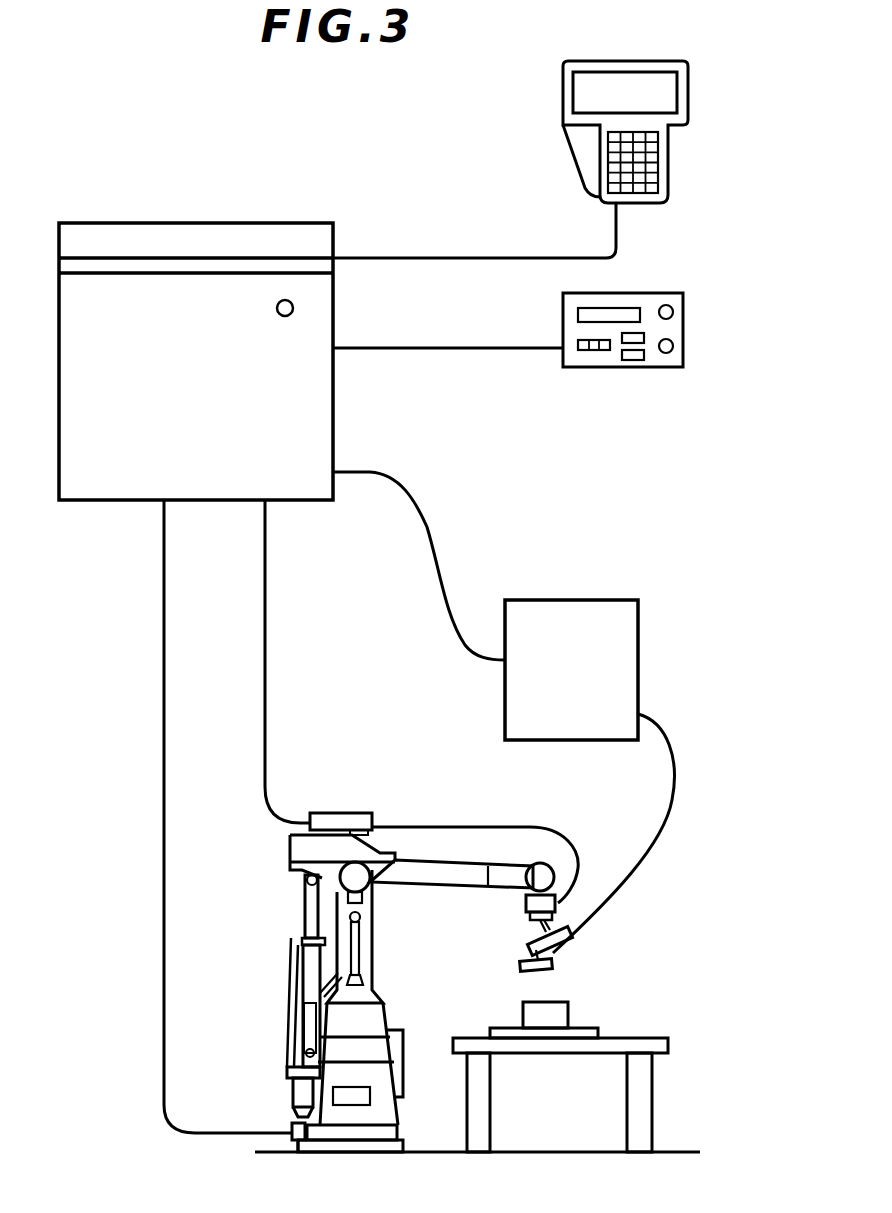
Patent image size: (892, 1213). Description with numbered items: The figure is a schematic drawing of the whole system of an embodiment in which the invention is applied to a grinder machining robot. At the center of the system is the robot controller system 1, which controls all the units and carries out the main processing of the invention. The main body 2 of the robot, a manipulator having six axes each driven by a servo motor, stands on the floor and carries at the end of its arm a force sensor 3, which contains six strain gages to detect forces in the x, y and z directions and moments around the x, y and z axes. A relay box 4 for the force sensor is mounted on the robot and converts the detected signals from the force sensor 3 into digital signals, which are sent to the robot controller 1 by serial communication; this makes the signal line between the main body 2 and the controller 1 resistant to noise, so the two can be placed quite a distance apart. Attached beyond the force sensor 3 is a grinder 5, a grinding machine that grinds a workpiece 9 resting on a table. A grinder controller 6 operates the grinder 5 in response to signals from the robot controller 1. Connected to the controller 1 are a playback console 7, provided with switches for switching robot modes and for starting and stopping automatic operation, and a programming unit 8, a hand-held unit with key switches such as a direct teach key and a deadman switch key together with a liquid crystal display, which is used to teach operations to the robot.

The robot controller system 1 is at (277, 222).
The main body of the robot 2 is at (287, 1062).
The force sensor 3 is at (570, 898).
The relay box 4 is at (340, 813).
The grinder 5 is at (583, 948).
The grinder controller 6 is at (640, 643).
The playback console 7 is at (683, 322).
The programming unit 8 is at (668, 166).
The workpiece 9 is at (568, 1012).